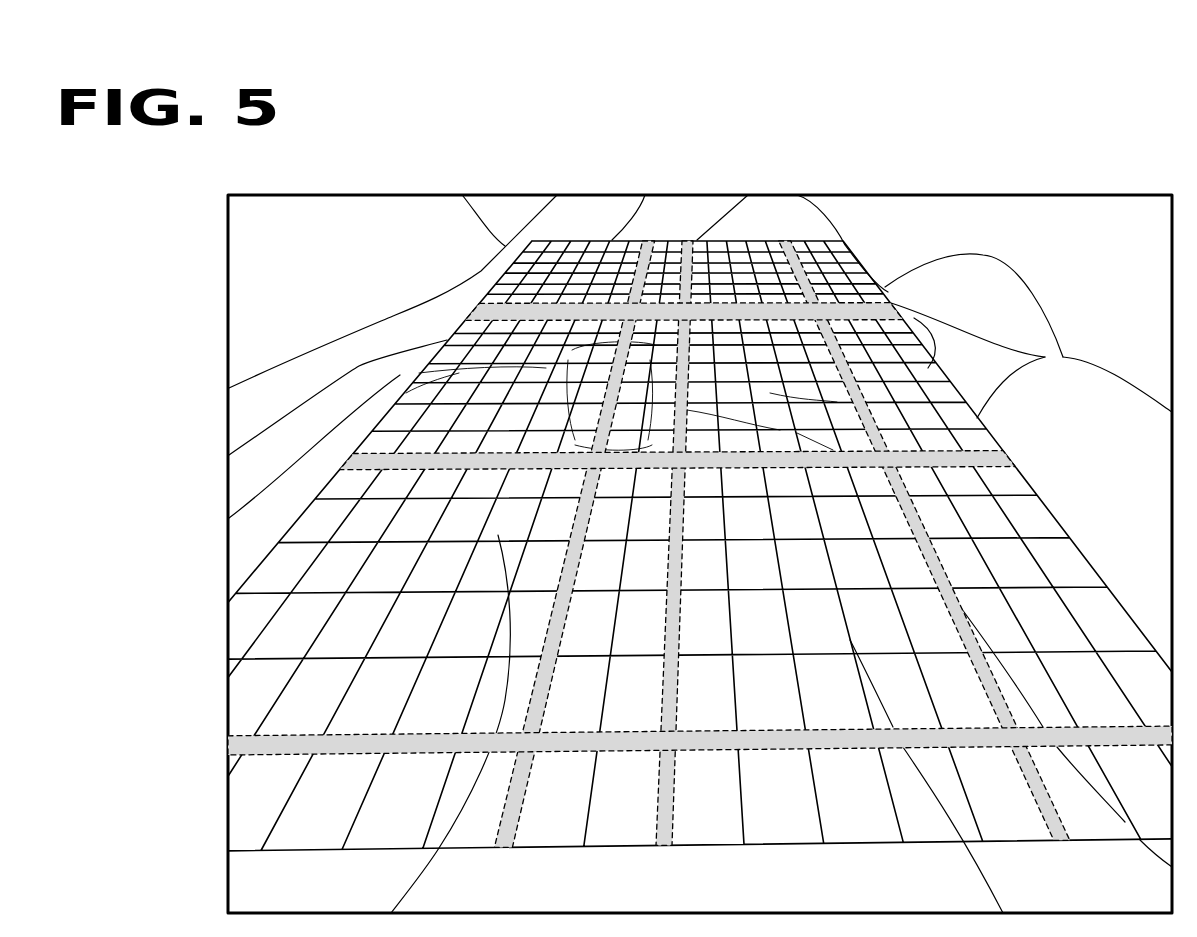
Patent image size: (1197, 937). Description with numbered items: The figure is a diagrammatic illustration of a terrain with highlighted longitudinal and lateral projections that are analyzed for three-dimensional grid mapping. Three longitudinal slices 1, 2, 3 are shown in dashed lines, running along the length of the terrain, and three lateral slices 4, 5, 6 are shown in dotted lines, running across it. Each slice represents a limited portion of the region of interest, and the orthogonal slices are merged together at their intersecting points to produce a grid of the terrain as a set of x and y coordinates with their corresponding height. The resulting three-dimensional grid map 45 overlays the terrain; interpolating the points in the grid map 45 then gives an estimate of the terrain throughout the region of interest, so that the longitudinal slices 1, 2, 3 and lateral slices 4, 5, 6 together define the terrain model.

The longitudinal slice 1 is at (566, 544).
The longitudinal slice 2 is at (662, 543).
The longitudinal slice 3 is at (924, 540).
The lateral slice 4 is at (700, 718).
The lateral slice 5 is at (678, 444).
The lateral slice 6 is at (684, 295).
The 3D grid map 45 is at (1047, 513).